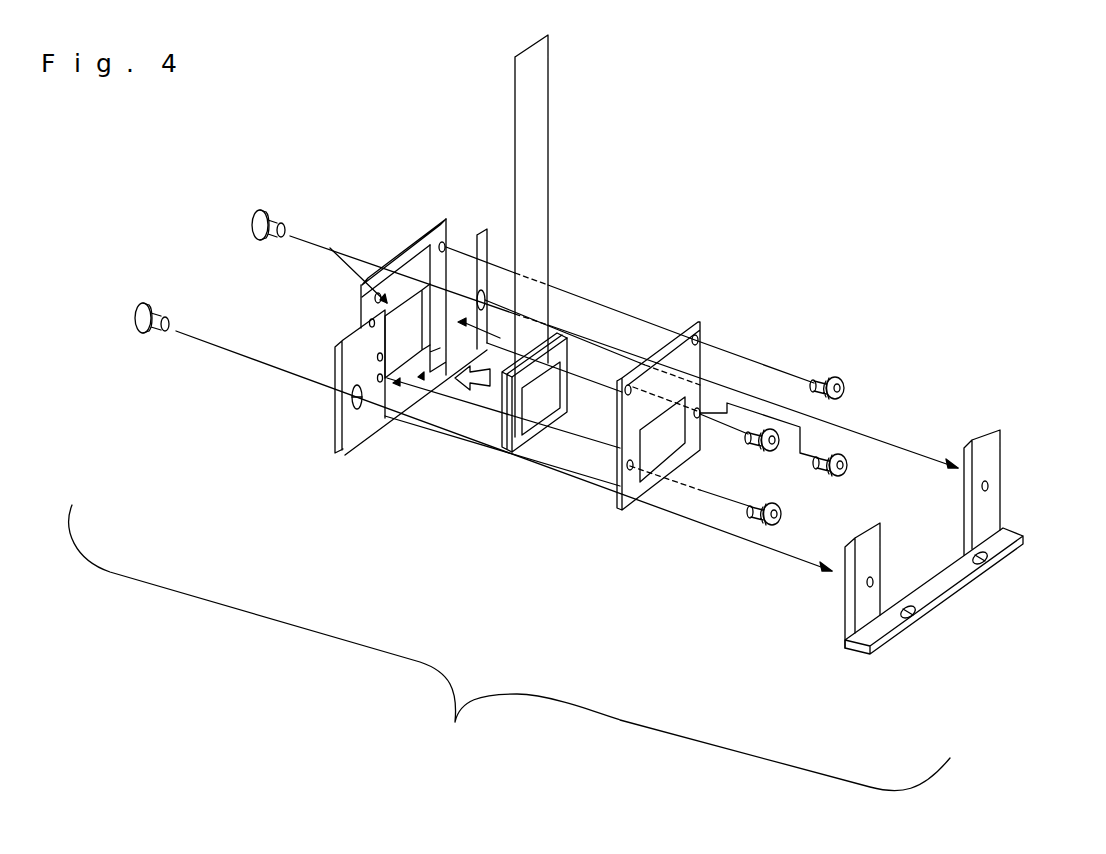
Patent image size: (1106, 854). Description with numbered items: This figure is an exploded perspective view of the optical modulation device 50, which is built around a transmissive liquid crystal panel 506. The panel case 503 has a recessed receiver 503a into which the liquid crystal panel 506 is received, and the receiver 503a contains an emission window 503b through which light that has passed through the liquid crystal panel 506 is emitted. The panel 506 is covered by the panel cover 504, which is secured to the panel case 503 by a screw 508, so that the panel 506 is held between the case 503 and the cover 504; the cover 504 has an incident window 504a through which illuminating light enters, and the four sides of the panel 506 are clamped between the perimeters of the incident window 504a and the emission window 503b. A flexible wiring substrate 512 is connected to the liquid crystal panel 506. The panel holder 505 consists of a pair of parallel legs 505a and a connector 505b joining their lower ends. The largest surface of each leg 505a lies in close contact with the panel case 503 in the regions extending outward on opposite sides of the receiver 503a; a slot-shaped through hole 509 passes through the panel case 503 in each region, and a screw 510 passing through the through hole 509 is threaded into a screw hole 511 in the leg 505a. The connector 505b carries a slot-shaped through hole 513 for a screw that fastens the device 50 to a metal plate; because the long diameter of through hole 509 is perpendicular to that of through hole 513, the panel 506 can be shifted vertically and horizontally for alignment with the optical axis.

The optical modulation device 50 is at (509, 648).
The panel case 503 is at (423, 370).
The receiver 503a is at (406, 408).
The emission window 503b is at (409, 330).
The panel cover 504 is at (712, 407).
The incident window 504a is at (653, 458).
The panel holder 505 is at (898, 582).
The legs 505a is at (990, 463).
The connector 505b is at (1000, 535).
The transmissive liquid crystal panel 506 is at (567, 340).
The screw 508 is at (788, 517).
The through hole 509 is at (356, 386).
The screw 510 is at (540, 372).
The screw hole 511 is at (983, 487).
The flexible wiring substrate 512 is at (541, 153).
The through hole 513 is at (982, 562).